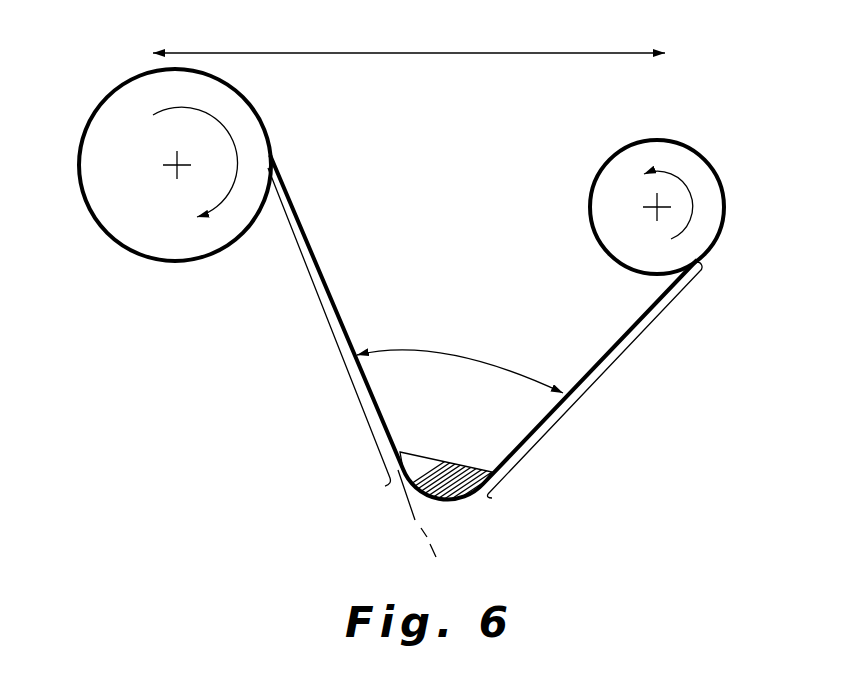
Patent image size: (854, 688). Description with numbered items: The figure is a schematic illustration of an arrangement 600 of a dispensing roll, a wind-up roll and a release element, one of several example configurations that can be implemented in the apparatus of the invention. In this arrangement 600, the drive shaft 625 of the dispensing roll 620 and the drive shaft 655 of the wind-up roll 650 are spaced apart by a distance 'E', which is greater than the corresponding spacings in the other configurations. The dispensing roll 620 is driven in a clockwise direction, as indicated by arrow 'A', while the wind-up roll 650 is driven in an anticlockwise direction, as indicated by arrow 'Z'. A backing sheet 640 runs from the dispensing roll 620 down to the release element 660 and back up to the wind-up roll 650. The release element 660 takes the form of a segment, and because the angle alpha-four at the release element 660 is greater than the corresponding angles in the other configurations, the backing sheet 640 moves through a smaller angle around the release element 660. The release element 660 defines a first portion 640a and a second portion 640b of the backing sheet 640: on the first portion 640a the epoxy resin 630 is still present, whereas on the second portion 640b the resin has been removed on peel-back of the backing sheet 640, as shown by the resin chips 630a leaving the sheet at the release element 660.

The arrangement 600 is at (160, 397).
The dispensing roll 620 is at (165, 260).
The drive shaft 625 is at (170, 168).
The epoxy resin 630 is at (381, 422).
The resin chips 630a is at (442, 535).
The backing sheet 640 is at (639, 322).
The first portion of backing sheet 640a is at (328, 339).
The second portion of backing sheet 640b is at (599, 380).
The wind-up roll 650 is at (723, 220).
The drive shaft 655 is at (660, 204).
The release element 660 is at (427, 478).